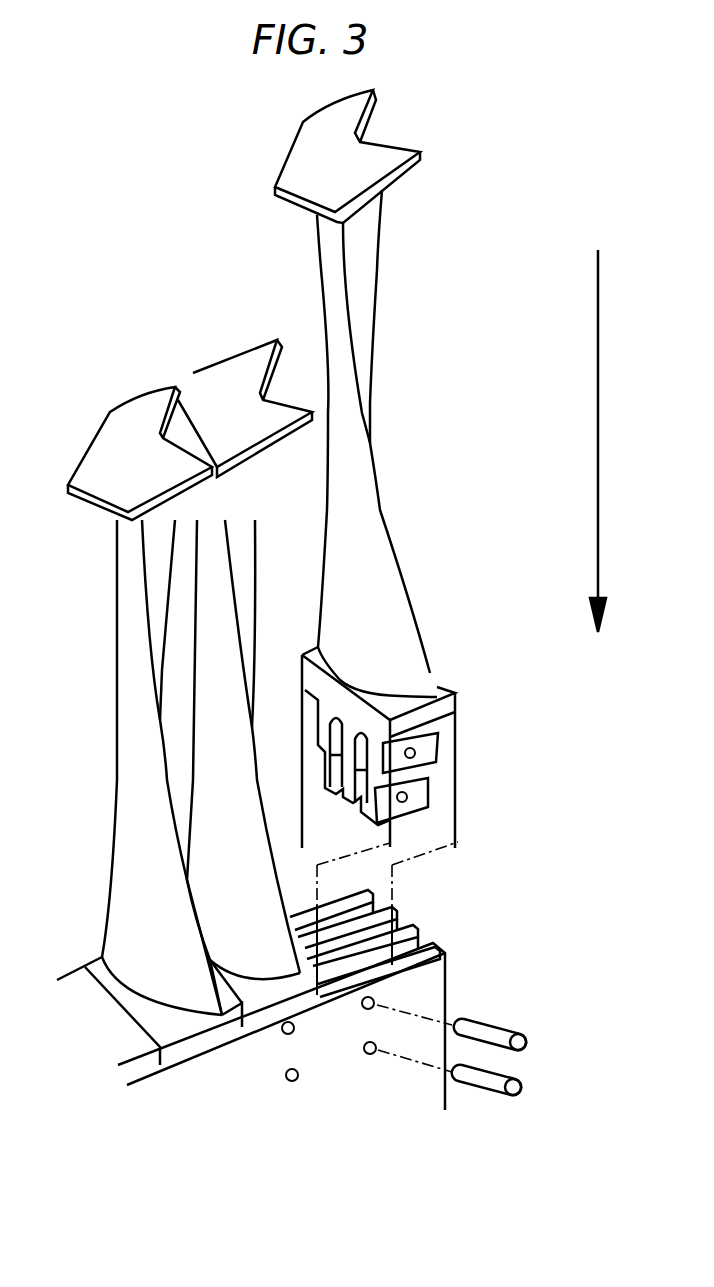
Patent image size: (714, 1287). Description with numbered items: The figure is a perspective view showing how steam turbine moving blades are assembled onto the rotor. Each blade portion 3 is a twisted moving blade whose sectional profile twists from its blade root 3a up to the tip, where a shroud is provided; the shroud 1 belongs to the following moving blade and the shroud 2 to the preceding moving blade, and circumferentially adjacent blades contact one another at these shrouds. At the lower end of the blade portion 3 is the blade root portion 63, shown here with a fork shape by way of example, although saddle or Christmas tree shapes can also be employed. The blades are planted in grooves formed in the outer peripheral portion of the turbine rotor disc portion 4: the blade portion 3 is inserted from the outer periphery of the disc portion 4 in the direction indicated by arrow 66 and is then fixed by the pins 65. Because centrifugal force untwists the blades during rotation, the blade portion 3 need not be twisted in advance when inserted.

The shroud of a following moving blade 1 is at (297, 179).
The shroud of a preceding moving blade 2 is at (242, 366).
The blade portion 3 is at (358, 393).
The blade root 3a is at (398, 643).
The turbine rotor disc portion 4 is at (428, 978).
The blade root portion 63 is at (447, 717).
The pin 65 is at (524, 1040).
The insertion direction arrow 66 is at (605, 422).